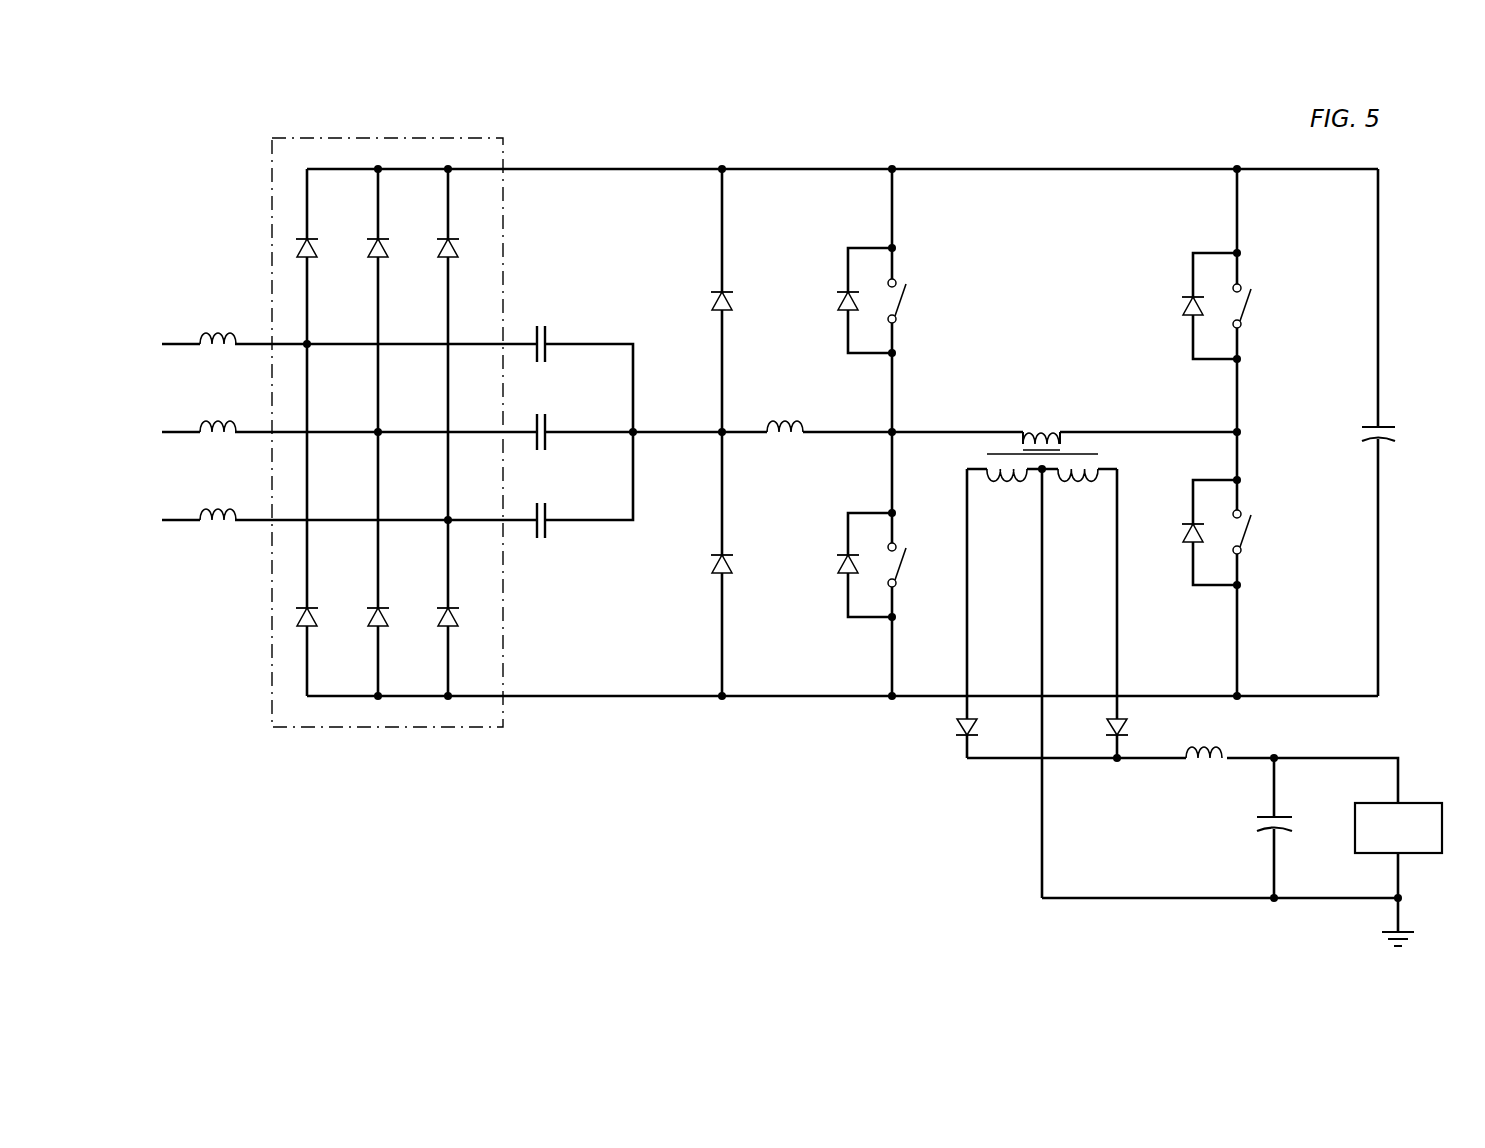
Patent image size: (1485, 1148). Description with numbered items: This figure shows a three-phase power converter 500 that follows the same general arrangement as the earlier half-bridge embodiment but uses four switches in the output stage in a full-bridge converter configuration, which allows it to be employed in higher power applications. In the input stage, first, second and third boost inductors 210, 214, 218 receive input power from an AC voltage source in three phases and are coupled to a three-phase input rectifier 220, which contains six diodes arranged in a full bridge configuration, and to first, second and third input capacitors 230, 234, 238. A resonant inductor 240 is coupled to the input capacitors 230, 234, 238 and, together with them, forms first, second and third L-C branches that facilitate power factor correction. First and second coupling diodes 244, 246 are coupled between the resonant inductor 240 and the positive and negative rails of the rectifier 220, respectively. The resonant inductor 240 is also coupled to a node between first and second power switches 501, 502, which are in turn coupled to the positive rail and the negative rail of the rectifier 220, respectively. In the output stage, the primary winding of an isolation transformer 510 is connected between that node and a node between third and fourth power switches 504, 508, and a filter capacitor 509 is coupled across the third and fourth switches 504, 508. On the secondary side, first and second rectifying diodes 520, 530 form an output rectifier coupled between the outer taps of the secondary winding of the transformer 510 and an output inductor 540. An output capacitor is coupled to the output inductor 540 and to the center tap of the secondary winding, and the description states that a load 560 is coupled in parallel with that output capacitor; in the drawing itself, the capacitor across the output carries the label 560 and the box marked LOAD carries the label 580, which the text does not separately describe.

The power converter 500 is at (236, 136).
The three-phase input rectifier 220 is at (272, 220).
The first boost inductor 210 is at (219, 332).
The second boost inductor 214 is at (219, 420).
The third boost inductor 218 is at (219, 508).
The first input capacitor 230 is at (547, 334).
The second input capacitor 234 is at (547, 422).
The third input capacitor 238 is at (547, 510).
The resonant inductor 240 is at (784, 448).
The first coupling diode 244 is at (711, 303).
The second coupling diode 246 is at (711, 566).
The first power switch 501 is at (837, 303).
The second power switch 502 is at (837, 566).
The third power switch 504 is at (1182, 308).
The fourth power switch 508 is at (1182, 534).
The filter capacitor 509 is at (1370, 424).
The isolation transformer 510 is at (1043, 418).
The first rectifying diode 520 is at (957, 727).
The second rectifying diode 530 is at (1108, 727).
The output inductor 540 is at (1209, 776).
The load 560 is at (1283, 816).
The load 580 is at (1353, 838).